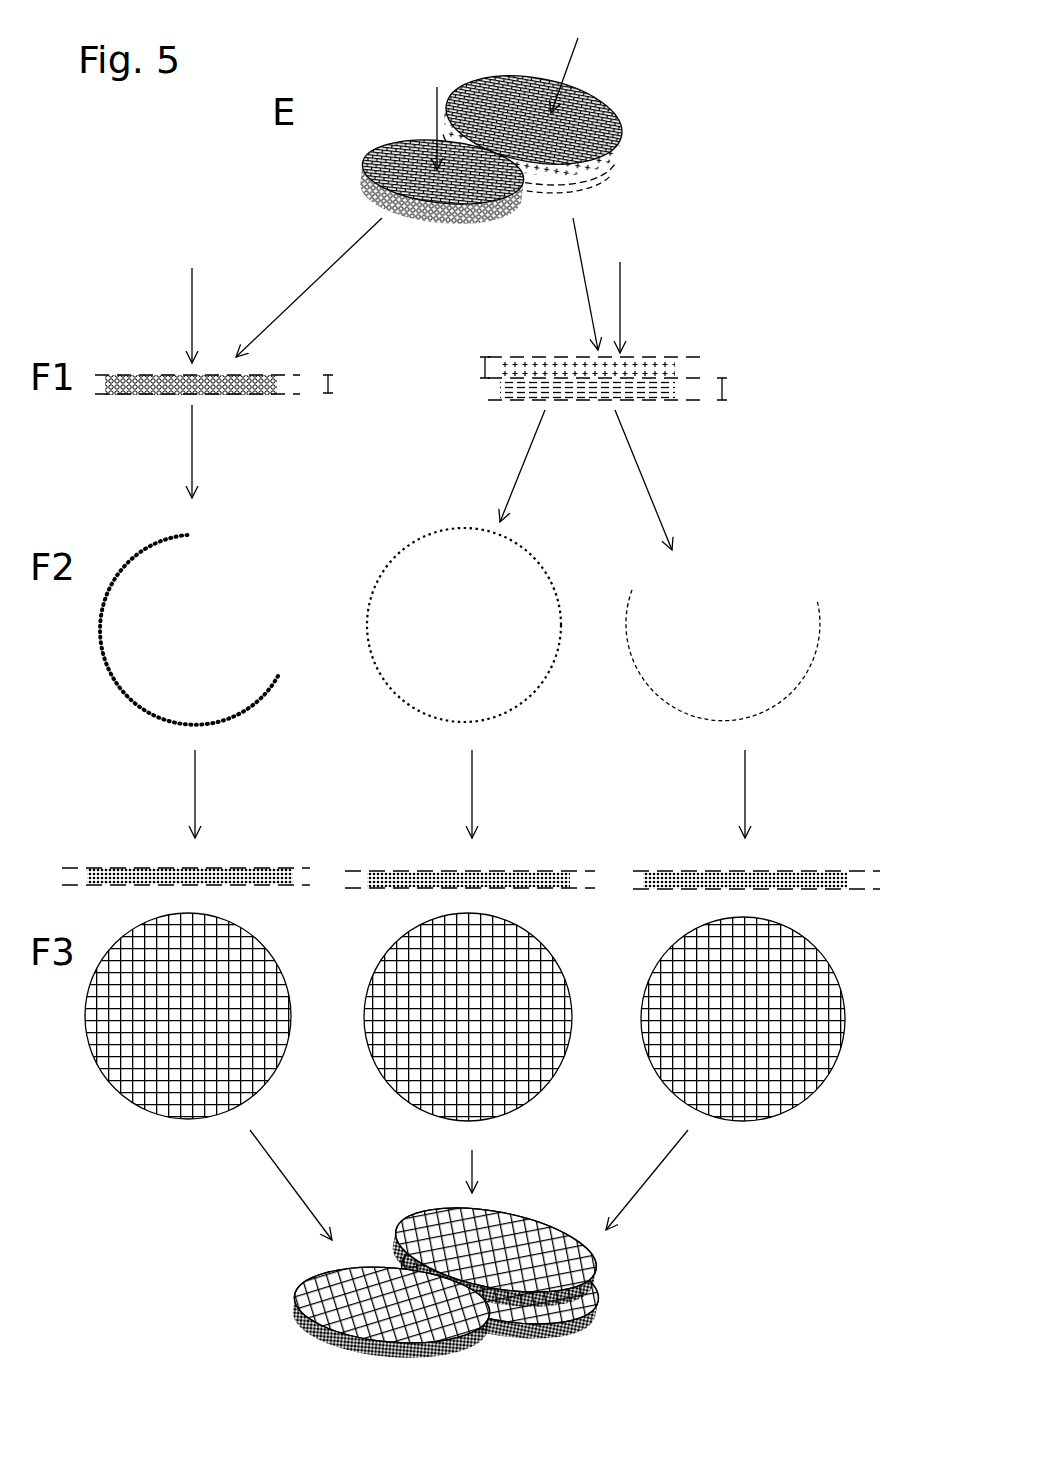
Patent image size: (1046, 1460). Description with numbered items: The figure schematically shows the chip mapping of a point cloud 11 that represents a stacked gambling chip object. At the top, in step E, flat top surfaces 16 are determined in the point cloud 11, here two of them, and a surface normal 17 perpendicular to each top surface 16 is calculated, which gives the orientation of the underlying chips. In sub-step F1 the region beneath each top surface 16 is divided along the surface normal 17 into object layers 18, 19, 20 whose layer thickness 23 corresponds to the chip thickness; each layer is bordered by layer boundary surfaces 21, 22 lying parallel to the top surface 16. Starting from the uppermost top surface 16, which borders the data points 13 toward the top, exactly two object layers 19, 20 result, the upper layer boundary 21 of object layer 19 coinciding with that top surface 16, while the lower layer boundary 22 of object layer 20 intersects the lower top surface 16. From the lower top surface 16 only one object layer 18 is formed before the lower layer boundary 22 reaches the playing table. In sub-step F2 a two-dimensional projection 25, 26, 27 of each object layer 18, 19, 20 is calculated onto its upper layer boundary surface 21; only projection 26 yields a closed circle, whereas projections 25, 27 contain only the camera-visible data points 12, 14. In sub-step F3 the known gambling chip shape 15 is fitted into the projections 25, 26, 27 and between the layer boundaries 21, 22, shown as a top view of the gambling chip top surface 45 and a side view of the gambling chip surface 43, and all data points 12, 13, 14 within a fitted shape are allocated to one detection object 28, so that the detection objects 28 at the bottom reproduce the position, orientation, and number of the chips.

The point cloud 11 is at (512, 72).
The data points 12 is at (380, 211).
The data points 13 is at (626, 141).
The data points 14 is at (574, 204).
The gambling chip shape 15 is at (501, 889).
The top surface 16 is at (400, 150).
The surface normal 17 is at (436, 108).
The object layer 18 is at (231, 392).
The object layer 19 is at (540, 368).
The object layer 20 is at (555, 385).
The layer boundary surface 21 is at (101, 372).
The layer boundary surface 22 is at (108, 395).
The layer thickness 23 is at (333, 385).
The two-dimensional projection 25 is at (122, 542).
The two-dimensional projection 26 is at (523, 715).
The two-dimensional projection 27 is at (695, 728).
The detection object 28 is at (585, 1261).
The gambling chip surface 43 is at (286, 867).
The gambling chip top surface 45 is at (222, 967).